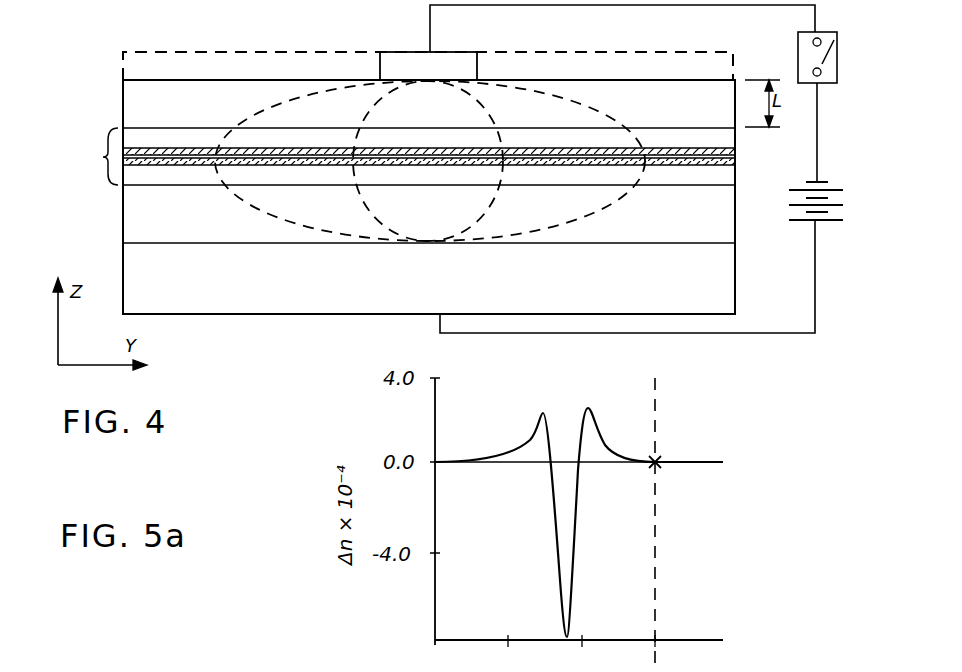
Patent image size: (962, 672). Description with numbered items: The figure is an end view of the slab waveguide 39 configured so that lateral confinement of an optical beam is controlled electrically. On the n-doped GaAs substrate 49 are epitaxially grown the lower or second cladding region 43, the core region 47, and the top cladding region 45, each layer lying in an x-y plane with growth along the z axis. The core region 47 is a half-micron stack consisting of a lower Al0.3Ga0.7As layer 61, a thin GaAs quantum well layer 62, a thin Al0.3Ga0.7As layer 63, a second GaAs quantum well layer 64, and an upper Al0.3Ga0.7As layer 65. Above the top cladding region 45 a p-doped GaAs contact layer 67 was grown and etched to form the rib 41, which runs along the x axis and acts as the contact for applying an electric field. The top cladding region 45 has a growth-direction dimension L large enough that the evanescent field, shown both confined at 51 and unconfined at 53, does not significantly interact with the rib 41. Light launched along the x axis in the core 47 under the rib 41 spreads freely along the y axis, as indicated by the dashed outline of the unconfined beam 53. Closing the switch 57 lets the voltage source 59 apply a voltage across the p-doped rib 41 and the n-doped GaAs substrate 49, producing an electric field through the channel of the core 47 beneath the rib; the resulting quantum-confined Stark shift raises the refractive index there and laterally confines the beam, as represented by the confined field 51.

The waveguide 39 is at (117, 47).
The rib 41 is at (416, 51).
The second cladding region 43 is at (123, 216).
The top cladding region 45 is at (123, 108).
The core region 47 is at (100, 158).
The n-doped GaAs substrate 49 is at (738, 282).
The evanescent field (confined) 51 is at (345, 218).
The unconfined beam 53 is at (594, 101).
The switch 57 is at (798, 45).
The voltage source 59 is at (826, 222).
The layer 61 is at (700, 183).
The GaAs layer (quantum well) 62 is at (706, 176).
The Al0.3Ga0.7As layer 63 is at (738, 157).
The GaAs layer (quantum well) 64 is at (738, 149).
The layer 65 is at (738, 130).
The contact layer 67 is at (318, 51).